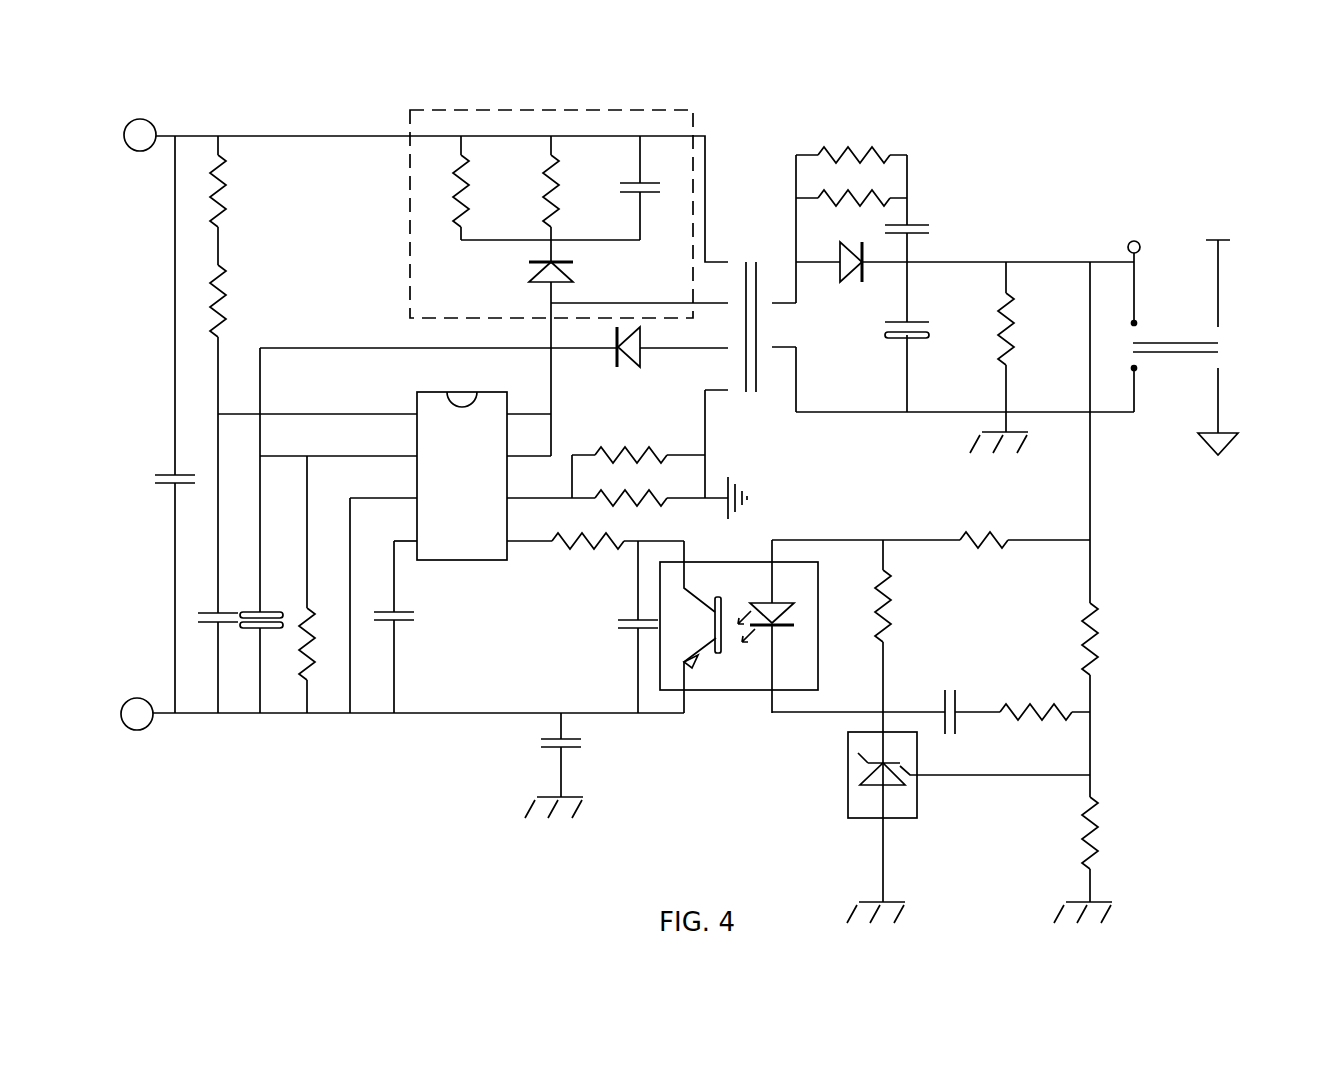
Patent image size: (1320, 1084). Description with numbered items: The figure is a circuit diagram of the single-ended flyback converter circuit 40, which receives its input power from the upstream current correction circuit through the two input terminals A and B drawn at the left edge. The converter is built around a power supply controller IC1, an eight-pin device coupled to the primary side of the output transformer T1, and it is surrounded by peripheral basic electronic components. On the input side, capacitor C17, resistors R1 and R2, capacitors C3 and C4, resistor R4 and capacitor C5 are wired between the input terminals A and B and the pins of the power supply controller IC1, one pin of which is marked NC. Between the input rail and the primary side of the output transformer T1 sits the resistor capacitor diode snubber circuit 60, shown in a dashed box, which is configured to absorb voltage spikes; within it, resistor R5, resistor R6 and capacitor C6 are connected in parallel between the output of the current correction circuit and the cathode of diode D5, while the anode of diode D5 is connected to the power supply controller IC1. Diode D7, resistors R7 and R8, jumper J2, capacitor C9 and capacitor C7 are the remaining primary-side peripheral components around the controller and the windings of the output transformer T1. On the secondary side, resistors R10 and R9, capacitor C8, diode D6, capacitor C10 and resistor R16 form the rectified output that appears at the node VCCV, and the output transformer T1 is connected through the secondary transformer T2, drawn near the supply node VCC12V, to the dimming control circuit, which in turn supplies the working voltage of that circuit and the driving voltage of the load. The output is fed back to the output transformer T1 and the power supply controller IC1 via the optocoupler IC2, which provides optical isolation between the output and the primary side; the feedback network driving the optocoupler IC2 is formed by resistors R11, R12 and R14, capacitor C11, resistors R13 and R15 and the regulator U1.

The input terminal A is at (140, 135).
The input terminal B is at (137, 714).
The capacitor C17 is at (156, 424).
The resistor R1 is at (236, 200).
The resistor R2 is at (236, 439).
The capacitor C3 is at (222, 663).
The capacitor C4 is at (268, 530).
The resistor R4 is at (321, 584).
The capacitor C5 is at (412, 627).
The not connected pin NC is at (309, 742).
The power supply controller IC1 is at (462, 459).
The RCD snubber circuit 60 is at (650, 106).
The resistor R5 is at (546, 188).
The resistor R6 is at (567, 199).
The capacitor C6 is at (651, 188).
The diode D5 is at (514, 268).
The diode D7 is at (608, 360).
The resistor R7 is at (638, 442).
The resistor R8 is at (617, 485).
The jumper resistor J2 is at (595, 559).
The capacitor C9 is at (621, 627).
The capacitor C7 is at (541, 765).
The optocoupler IC2 is at (739, 655).
The output transformer T1 is at (748, 308).
The resistor R10 is at (851, 140).
The resistor R9 is at (851, 185).
The capacitor C8 is at (928, 219).
The diode D6 is at (833, 273).
The capacitor C10 is at (887, 348).
The resistor R16 is at (1016, 357).
The output voltage VCCV is at (1125, 235).
The secondary transformer T2 is at (1197, 332).
The supply voltage VCC12V is at (1230, 332).
The single-ended flyback converter circuit 40 is at (1045, 162).
The resistor R11 is at (981, 523).
The resistor R12 is at (908, 591).
The resistor R14 is at (1054, 639).
The capacitor C11 is at (954, 727).
The resistor R13 is at (1036, 731).
The resistor R15 is at (1060, 833).
The shunt regulator U1 TL431 U1 is at (925, 792).